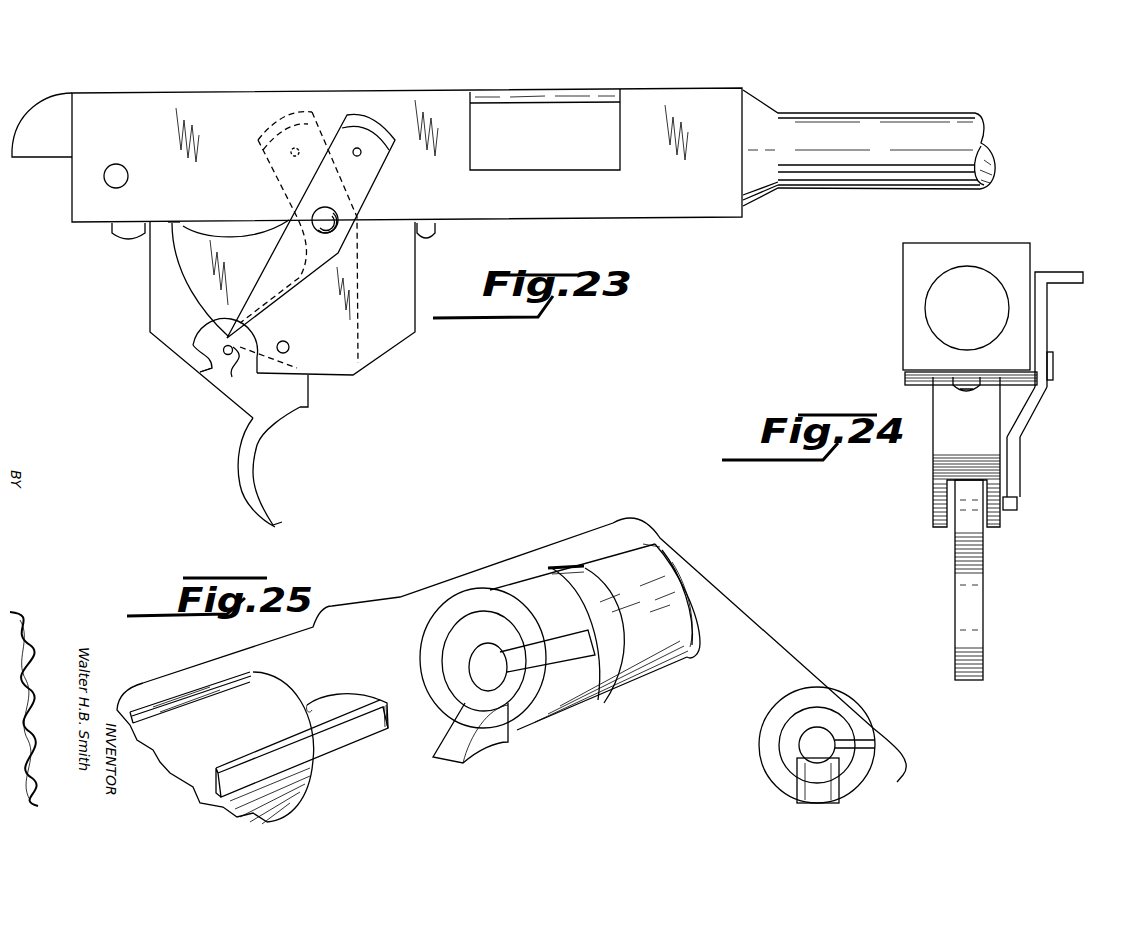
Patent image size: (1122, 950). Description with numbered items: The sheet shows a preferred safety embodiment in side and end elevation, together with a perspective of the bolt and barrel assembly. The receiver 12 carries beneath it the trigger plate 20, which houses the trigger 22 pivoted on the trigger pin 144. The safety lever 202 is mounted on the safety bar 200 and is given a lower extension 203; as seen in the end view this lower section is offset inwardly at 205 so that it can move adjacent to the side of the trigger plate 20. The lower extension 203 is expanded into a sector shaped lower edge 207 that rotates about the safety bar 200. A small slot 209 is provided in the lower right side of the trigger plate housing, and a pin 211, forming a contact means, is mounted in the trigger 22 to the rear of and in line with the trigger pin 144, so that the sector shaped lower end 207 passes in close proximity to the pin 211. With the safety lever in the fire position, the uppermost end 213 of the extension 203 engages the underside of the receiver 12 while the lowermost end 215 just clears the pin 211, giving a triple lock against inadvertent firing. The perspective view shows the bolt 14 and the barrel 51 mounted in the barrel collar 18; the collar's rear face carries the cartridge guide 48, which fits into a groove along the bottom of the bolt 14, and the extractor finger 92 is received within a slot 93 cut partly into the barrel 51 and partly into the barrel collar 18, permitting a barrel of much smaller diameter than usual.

In FIG. 23, the receiver 12 is at (318, 92).
In FIG. 24, the receiver 12 is at (903, 306).
In FIG. 25, the bolt 14 is at (258, 682).
In FIG. 23, the barrel collar 18 is at (758, 194).
In FIG. 25, the barrel collar 18 is at (547, 728).
In FIG. 23, the trigger plate 20 is at (399, 328).
In FIG. 24, the trigger plate 20 is at (938, 462).
In FIG. 23, the trigger 22 is at (290, 404).
In FIG. 24, the trigger 22 is at (962, 575).
In FIG. 25, the cartridge guide 48 is at (481, 742).
In FIG. 23, the barrel 51 is at (832, 188).
In FIG. 25, the barrel 51 is at (452, 640).
In FIG. 25, the extractor finger 92 is at (340, 690).
In FIG. 25, the slot 93 is at (573, 642).
In FIG. 23, the trigger pin 144 is at (290, 345).
In FIG. 23, the safety bar 200 is at (327, 203).
In FIG. 24, the safety bar 200 is at (1053, 370).
In FIG. 23, the safety lever 202 is at (370, 120).
In FIG. 24, the safety lever 202 is at (1047, 302).
In FIG. 23, the lower extension 203 is at (183, 226).
In FIG. 24, the lower extension 203 is at (1020, 444).
In FIG. 24, the inward offset 205 is at (1031, 412).
In FIG. 23, the sector shaped lower edge 207 is at (182, 287).
In FIG. 23, the slot 209 is at (212, 366).
In FIG. 23, the pin 211 is at (233, 370).
In FIG. 24, the pin 211 is at (1020, 503).
In FIG. 23, the uppermost end 213 is at (176, 224).
In FIG. 23, the lowermost end 215 is at (212, 330).